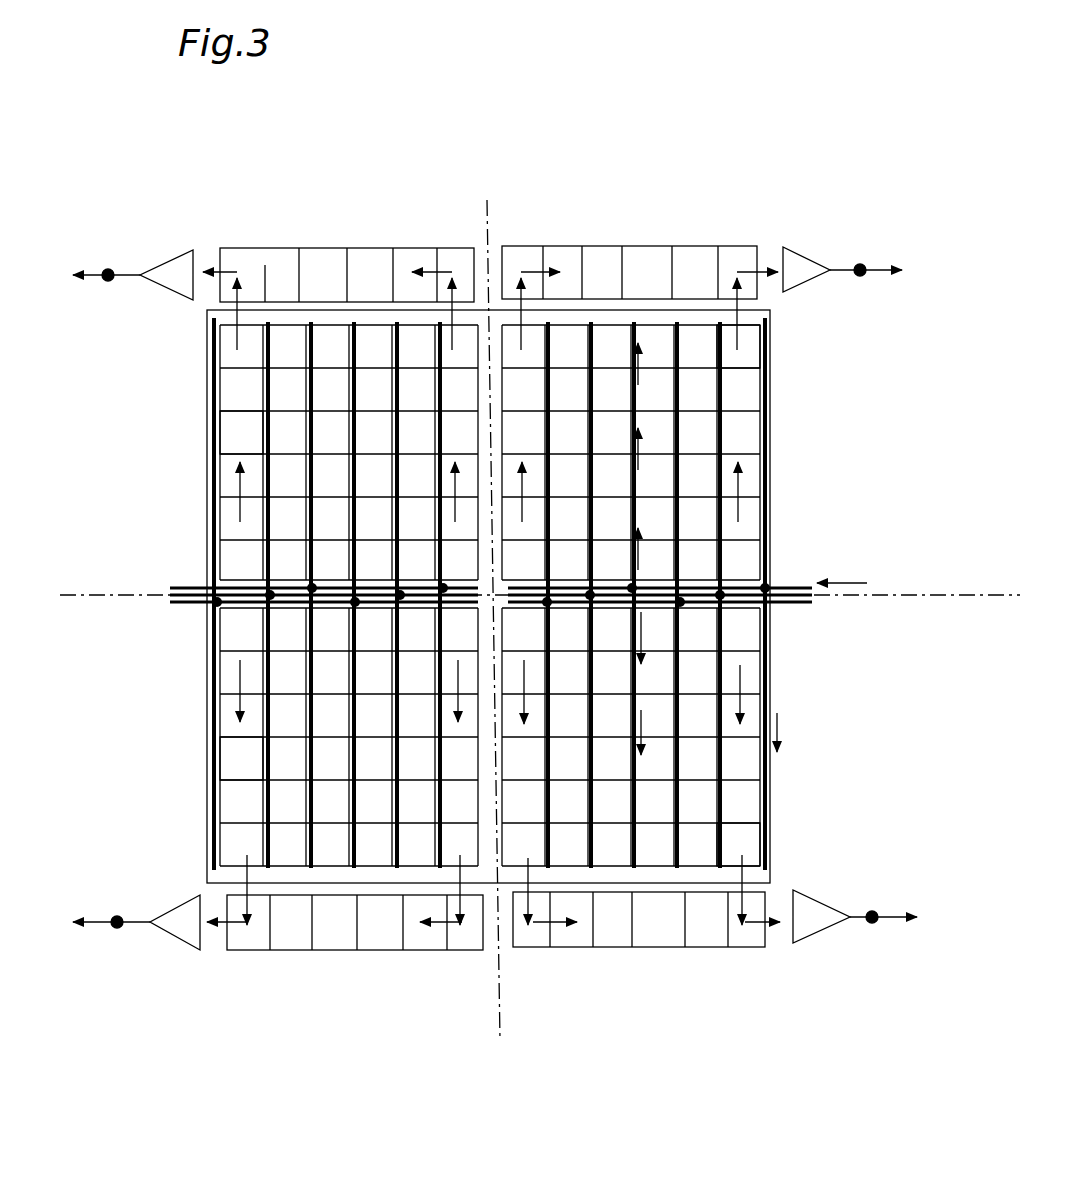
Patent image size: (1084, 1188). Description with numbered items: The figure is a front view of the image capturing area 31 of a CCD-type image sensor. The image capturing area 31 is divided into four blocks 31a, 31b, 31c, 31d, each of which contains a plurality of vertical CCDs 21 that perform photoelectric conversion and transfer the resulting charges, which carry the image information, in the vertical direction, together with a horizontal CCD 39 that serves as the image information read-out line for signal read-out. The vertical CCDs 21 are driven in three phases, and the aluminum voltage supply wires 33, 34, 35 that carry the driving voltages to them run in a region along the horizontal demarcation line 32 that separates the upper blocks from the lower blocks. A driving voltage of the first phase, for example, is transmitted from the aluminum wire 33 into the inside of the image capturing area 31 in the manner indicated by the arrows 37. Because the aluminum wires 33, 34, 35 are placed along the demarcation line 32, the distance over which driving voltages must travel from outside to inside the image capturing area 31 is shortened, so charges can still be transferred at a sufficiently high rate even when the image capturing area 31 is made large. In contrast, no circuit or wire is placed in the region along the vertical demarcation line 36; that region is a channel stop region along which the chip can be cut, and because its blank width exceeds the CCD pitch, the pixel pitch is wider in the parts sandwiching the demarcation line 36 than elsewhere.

The vertical CCD 21 is at (230, 427).
The image capturing area 31 is at (810, 348).
The block 31a is at (188, 352).
The block 31b is at (805, 428).
The block 31c is at (188, 818).
The block 31d is at (810, 802).
The horizontal demarcation line 32 is at (140, 595).
The aluminum wire 33 is at (178, 588).
The aluminum wire 34 is at (172, 603).
The aluminum wire 35 is at (190, 604).
The vertical demarcation line 36 is at (497, 998).
The arrow 37 is at (238, 306).
The horizontal CCD 39 is at (313, 248).